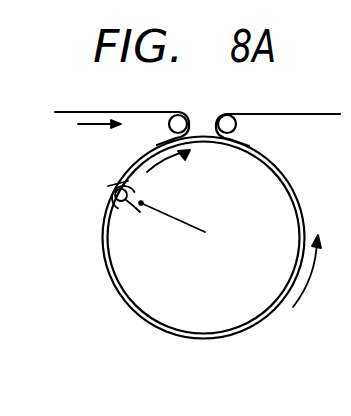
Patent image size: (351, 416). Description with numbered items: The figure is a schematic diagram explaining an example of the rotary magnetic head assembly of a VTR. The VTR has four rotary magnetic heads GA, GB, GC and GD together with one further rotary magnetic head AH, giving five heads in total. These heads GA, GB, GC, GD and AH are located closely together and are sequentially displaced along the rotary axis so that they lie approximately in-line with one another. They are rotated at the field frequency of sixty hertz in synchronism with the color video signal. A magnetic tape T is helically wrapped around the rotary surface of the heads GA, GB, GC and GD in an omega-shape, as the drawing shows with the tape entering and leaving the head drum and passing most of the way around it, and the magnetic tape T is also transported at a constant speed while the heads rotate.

The magnetic tape T is at (157, 328).
The rotary magnetic head GA is at (113, 203).
The rotary magnetic head GB is at (78, 238).
The rotary magnetic head GC is at (114, 264).
The rotary magnetic head GD is at (75, 273).
The rotary magnetic head AH is at (81, 301).